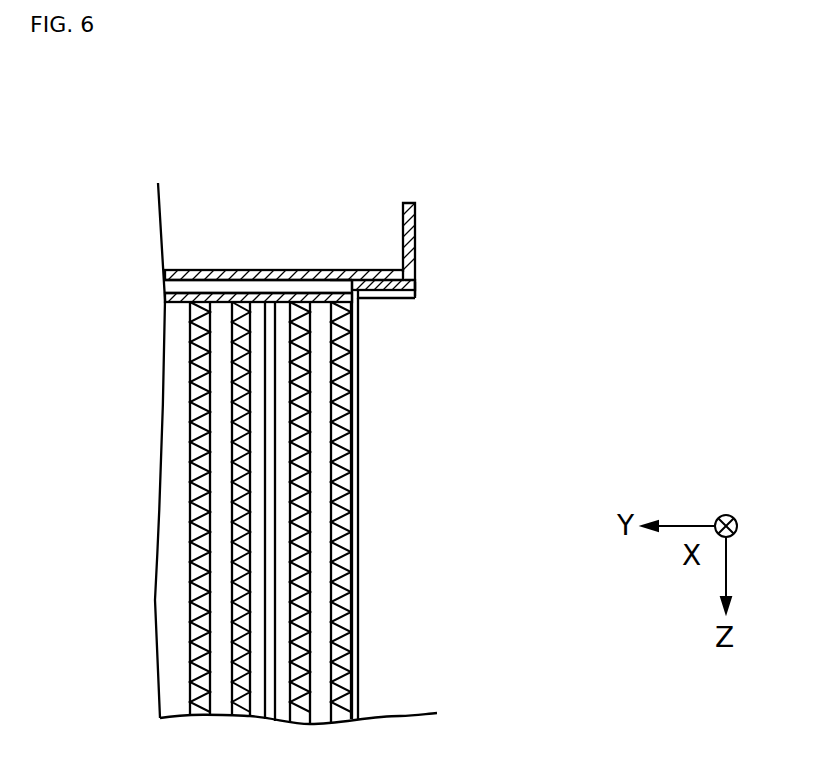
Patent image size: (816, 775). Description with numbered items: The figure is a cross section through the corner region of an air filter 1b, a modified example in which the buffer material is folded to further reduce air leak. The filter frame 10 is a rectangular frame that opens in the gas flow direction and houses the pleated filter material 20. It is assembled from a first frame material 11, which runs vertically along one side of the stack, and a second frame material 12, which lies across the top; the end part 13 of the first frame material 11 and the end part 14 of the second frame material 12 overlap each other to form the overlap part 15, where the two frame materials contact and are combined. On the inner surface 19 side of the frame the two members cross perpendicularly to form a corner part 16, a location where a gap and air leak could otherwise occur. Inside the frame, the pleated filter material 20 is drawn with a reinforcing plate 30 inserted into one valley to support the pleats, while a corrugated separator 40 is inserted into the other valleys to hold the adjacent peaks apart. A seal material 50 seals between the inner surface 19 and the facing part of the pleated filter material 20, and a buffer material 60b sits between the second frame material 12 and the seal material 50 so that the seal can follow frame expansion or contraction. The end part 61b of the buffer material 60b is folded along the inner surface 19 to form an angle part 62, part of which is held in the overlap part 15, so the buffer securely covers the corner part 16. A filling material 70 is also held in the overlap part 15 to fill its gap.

The air filter 1b is at (126, 144).
The filter frame 10 is at (372, 522).
The first frame material 11 is at (356, 635).
The second frame material 12 is at (163, 275).
The end part 13 is at (397, 292).
The end part 14 is at (378, 282).
The overlap part 15 is at (437, 282).
The corner part 16 is at (340, 284).
The inner surface 19 is at (351, 410).
The pleated filter material 20 is at (320, 595).
The reinforcing plate 30 is at (272, 465).
The separator 40 is at (348, 683).
The seal material 50 is at (163, 300).
The buffer material 60b is at (165, 287).
The end part 61b is at (345, 318).
The angle part 62 is at (353, 282).
The filling material 70 is at (407, 283).